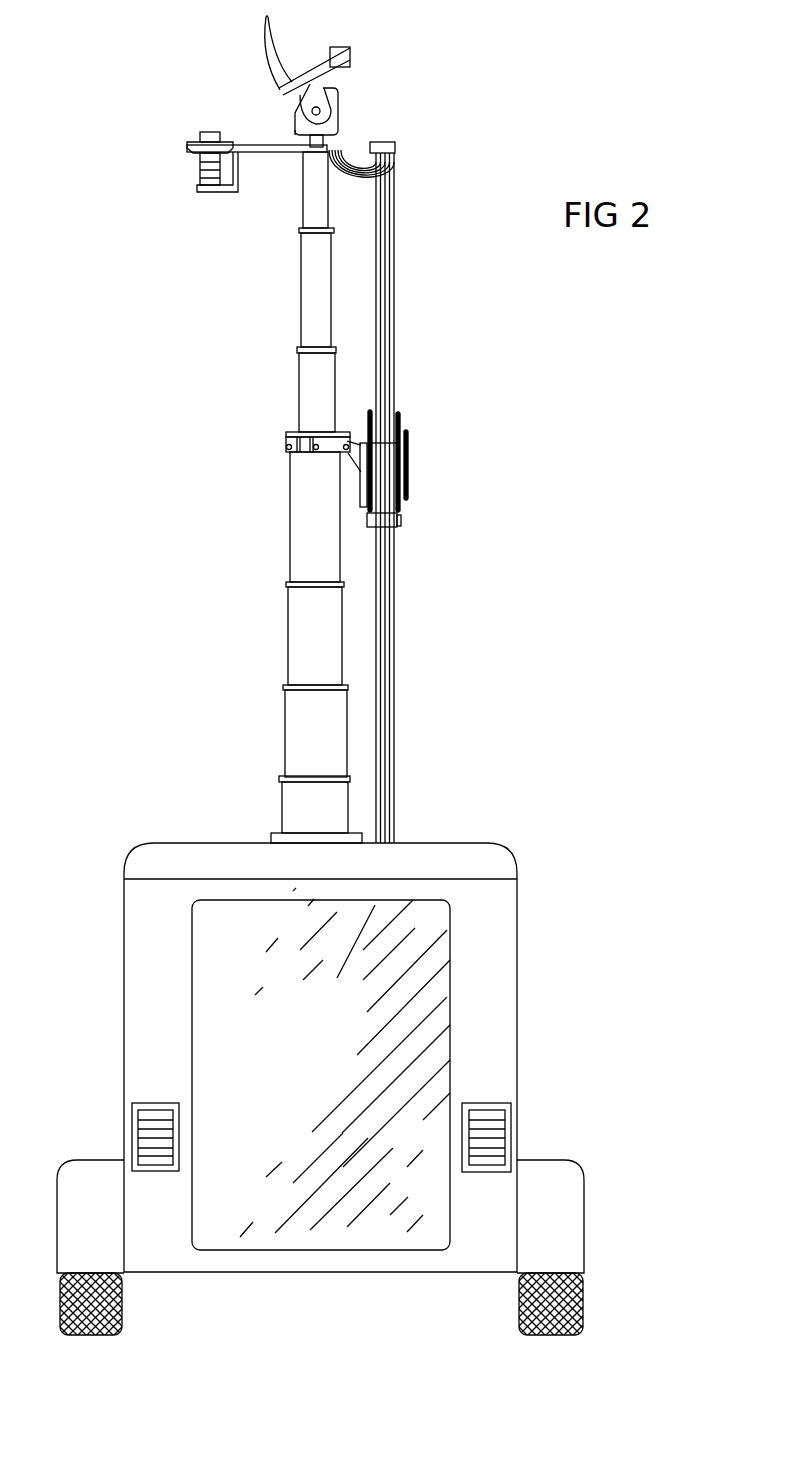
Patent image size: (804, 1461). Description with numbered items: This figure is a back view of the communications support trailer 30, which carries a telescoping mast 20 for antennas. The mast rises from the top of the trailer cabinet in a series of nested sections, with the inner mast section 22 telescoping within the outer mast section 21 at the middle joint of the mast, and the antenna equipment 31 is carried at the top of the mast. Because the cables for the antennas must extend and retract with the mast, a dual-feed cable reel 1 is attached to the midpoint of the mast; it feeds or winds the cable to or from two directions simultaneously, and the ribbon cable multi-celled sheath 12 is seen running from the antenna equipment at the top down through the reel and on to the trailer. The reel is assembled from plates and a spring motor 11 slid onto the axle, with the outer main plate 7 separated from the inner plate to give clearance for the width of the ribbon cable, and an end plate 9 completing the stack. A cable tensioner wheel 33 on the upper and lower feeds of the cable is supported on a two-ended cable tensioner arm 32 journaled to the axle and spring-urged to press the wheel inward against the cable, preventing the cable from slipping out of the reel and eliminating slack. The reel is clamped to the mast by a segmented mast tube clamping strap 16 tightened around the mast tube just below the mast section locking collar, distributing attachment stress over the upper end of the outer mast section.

The dual-feed cable reel 1 is at (397, 412).
The outer main plate of reel 7 is at (406, 496).
The end plate 9 is at (405, 446).
The spring motor 11 is at (366, 446).
The ribbon cable multi-celled sheath 12 is at (397, 254).
The mast tube clamping strap 16 is at (286, 448).
The telescoping mast 20 is at (273, 497).
The outer mast section at middle joint of mast 21 is at (310, 527).
The inner mast section at middle joint of mast 22 is at (308, 382).
The communications support trailer 30 is at (328, 1044).
The antenna equipment 31 is at (198, 84).
The cable tensioner arm 32 is at (400, 522).
The cable tensioner wheel 33 is at (398, 521).